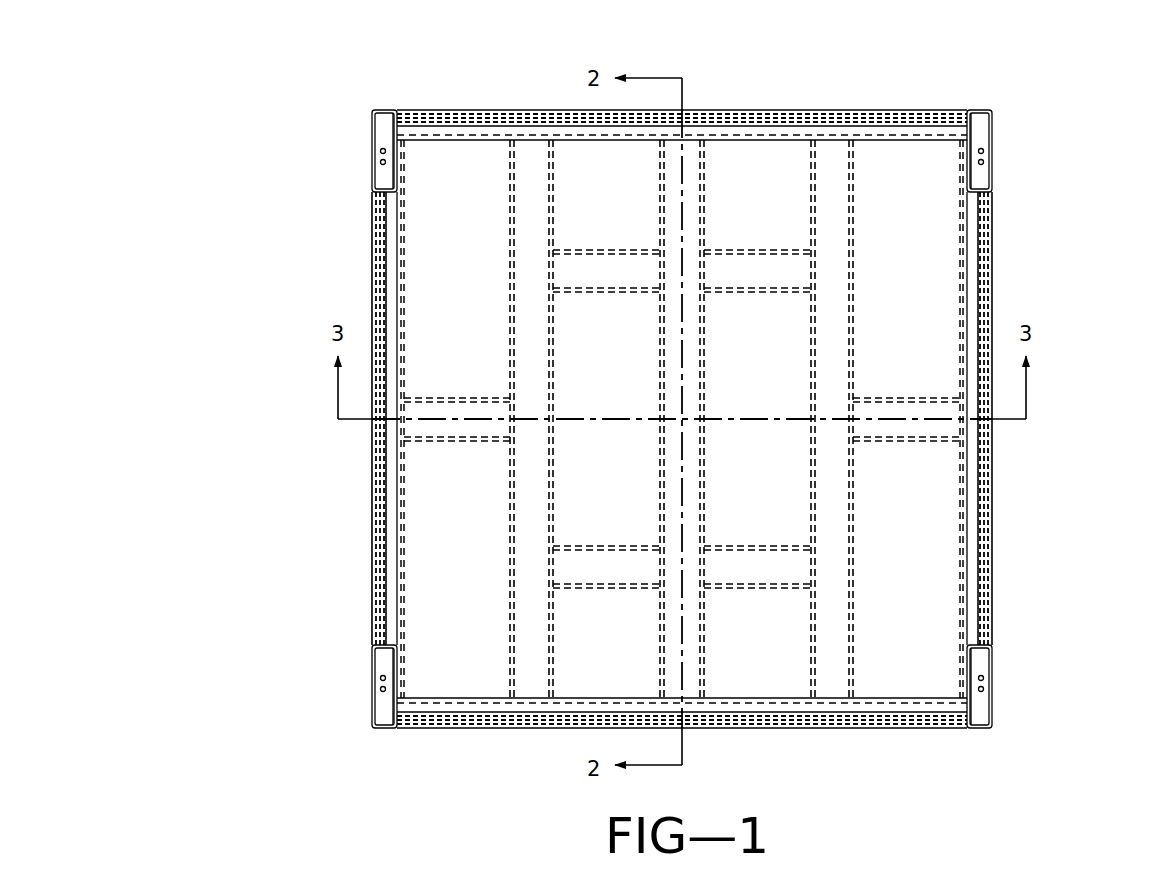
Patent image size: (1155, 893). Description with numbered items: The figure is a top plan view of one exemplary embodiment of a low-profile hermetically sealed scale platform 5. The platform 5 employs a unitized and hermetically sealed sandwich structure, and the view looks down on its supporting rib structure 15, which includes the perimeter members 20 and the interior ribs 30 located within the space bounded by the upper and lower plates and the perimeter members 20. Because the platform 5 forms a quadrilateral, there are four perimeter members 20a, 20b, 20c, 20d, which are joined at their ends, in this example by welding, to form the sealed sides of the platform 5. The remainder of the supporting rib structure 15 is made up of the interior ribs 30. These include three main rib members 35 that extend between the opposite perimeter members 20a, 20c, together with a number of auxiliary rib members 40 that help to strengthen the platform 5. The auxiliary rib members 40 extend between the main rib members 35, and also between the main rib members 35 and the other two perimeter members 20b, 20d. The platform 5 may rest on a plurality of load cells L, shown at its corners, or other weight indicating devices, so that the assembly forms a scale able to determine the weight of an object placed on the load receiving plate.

The hermetically sealed scale platform 5 is at (216, 162).
The supporting rib structure 15 is at (509, 532).
The perimeter members 20 is at (999, 212).
The perimeter member 20a is at (790, 130).
The perimeter member 20b is at (377, 248).
The perimeter member 20c is at (792, 730).
The perimeter member 20d is at (993, 582).
The interior ribs 30 is at (866, 320).
The main rib members 35 is at (510, 218).
The auxiliary rib members 40 is at (905, 438).
The load cells L is at (985, 703).